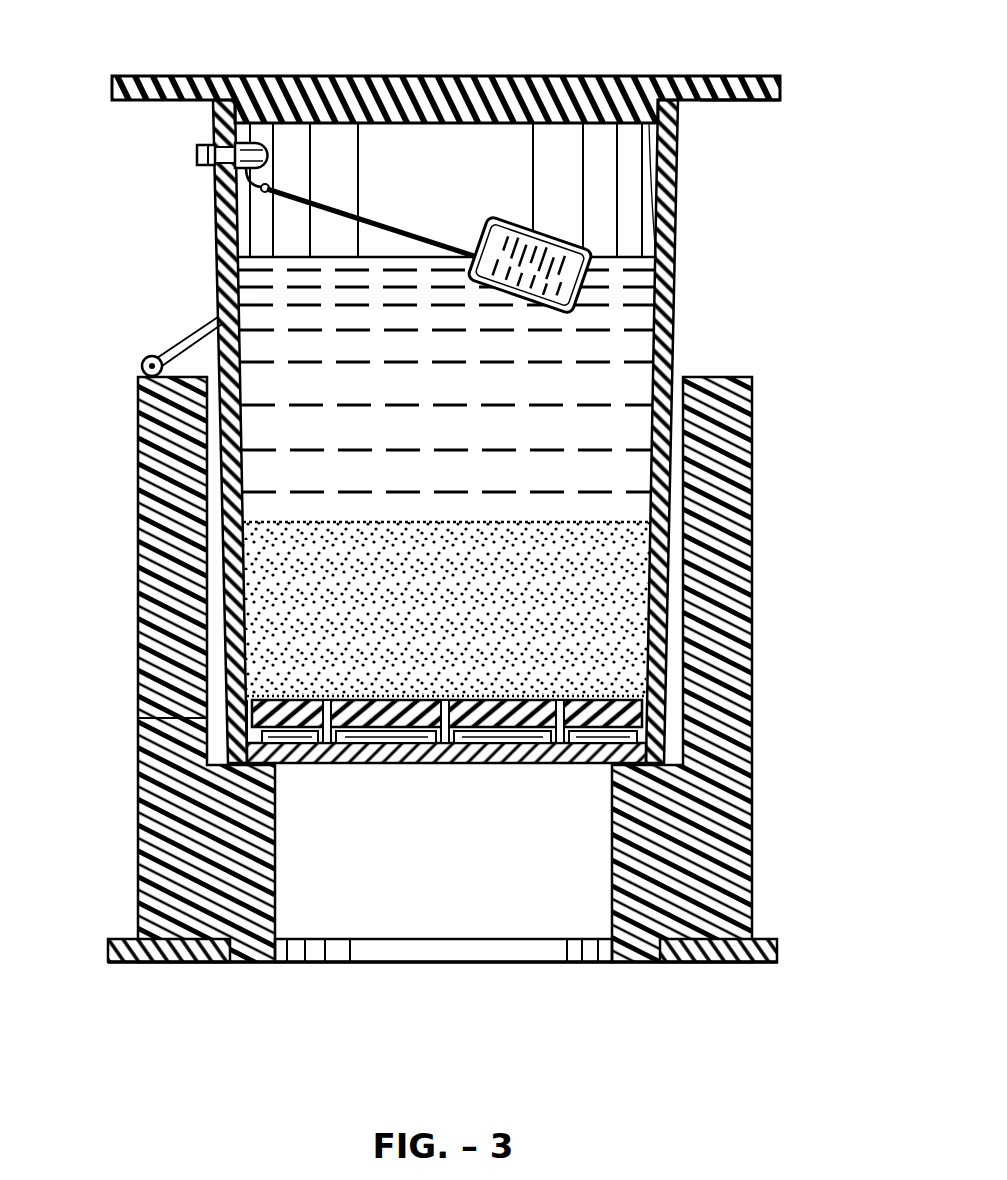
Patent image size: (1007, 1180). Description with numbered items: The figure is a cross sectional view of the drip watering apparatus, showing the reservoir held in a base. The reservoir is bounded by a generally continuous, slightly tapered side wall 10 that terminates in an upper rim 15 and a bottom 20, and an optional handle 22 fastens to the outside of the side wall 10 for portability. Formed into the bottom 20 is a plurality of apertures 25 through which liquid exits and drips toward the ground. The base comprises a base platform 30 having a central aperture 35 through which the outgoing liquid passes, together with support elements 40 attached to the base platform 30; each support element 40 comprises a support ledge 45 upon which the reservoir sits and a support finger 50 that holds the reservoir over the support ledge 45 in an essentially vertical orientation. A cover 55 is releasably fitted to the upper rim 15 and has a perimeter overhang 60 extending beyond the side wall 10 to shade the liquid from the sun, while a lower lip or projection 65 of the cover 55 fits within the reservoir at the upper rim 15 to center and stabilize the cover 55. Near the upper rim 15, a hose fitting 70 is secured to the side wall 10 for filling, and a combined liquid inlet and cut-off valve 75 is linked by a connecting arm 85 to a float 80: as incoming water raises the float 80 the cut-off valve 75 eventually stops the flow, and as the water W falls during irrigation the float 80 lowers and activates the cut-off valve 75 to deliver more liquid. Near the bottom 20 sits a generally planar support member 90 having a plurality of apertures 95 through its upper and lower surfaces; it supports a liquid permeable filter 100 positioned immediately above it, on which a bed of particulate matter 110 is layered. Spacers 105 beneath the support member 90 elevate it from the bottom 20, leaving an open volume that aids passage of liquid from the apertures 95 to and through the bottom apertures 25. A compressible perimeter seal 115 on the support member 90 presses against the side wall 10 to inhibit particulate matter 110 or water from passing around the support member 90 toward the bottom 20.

The side wall 10 is at (680, 280).
The upper rim 15 is at (688, 105).
The bottom 20 is at (405, 768).
The handle 22 is at (148, 356).
The apertures 25 is at (316, 766).
The base platform 30 is at (175, 963).
The central aperture 35 is at (468, 969).
The support elements 40 is at (133, 568).
The support ledge 45 is at (220, 752).
The support finger 50 is at (140, 487).
The cover 55 is at (328, 70).
The perimeter overhang 60 is at (760, 103).
The lower lip or projection 65 is at (680, 192).
The hose fitting 70 is at (213, 160).
The cut-off valve 75 is at (235, 150).
The float 80 is at (503, 220).
The connecting arm 85 is at (452, 235).
The support member 90 is at (478, 700).
The apertures 95 is at (328, 746).
The filter 100 is at (576, 690).
The spacers 105 is at (306, 765).
The particulate matter 110 is at (265, 585).
The perimeter seal 115 is at (207, 675).
The water W is at (267, 347).